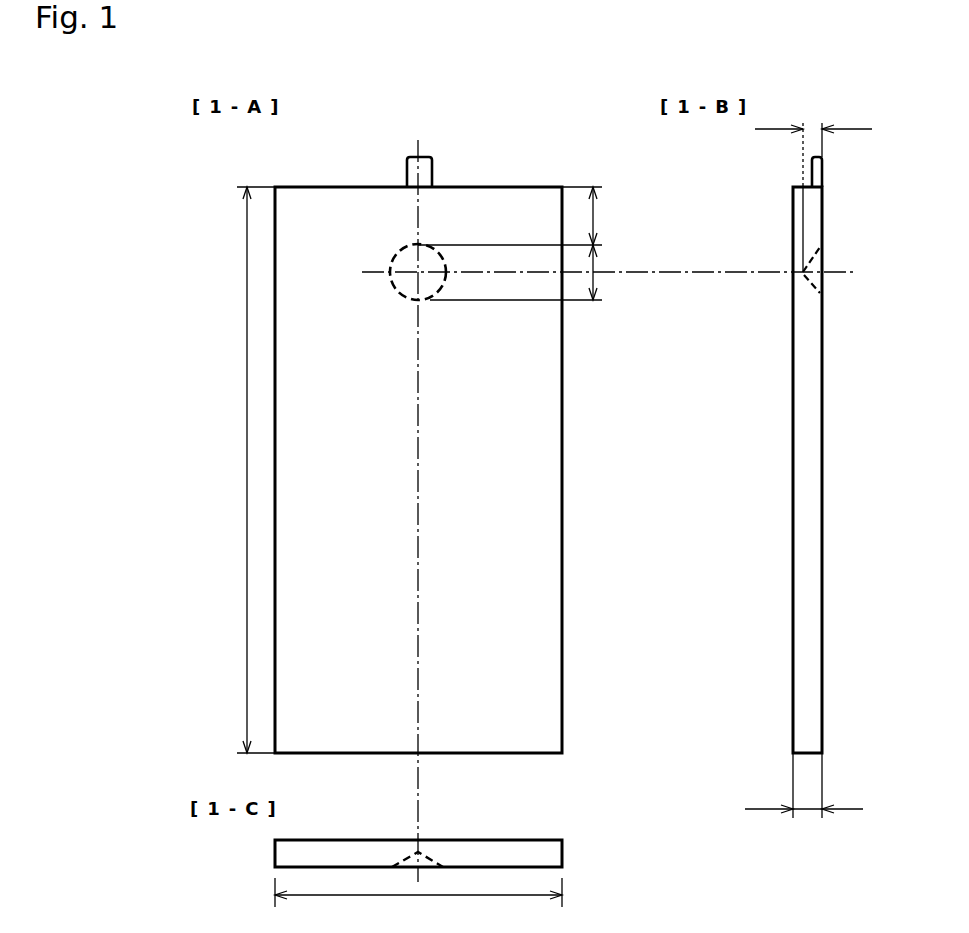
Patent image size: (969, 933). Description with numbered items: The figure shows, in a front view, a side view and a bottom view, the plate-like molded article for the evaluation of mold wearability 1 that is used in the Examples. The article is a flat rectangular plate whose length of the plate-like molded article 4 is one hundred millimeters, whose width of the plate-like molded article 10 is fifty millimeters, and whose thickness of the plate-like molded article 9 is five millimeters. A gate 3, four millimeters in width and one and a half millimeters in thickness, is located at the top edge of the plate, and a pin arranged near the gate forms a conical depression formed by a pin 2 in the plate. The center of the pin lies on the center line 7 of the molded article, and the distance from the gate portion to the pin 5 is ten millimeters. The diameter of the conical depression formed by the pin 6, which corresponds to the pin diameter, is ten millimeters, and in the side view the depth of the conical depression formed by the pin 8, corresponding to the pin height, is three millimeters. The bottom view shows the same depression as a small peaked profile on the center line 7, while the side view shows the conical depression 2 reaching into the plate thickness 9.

The plate-like molded article for the evaluation of mold wearability 1 is at (500, 523).
The conical depression formed by a pin 2 is at (427, 292).
The gate 3 is at (434, 170).
The length of the plate-like molded article 4 is at (244, 470).
The distance from the gate portion to the pin 5 is at (517, 216).
The diameter of the conical depression formed by the pin 6 is at (523, 274).
The center line 7 is at (418, 222).
The depth of the conical depression formed by the pin 8 is at (813, 155).
The thickness of the plate-like molded article 9 is at (804, 799).
The width of the plate-like molded article 10 is at (418, 901).